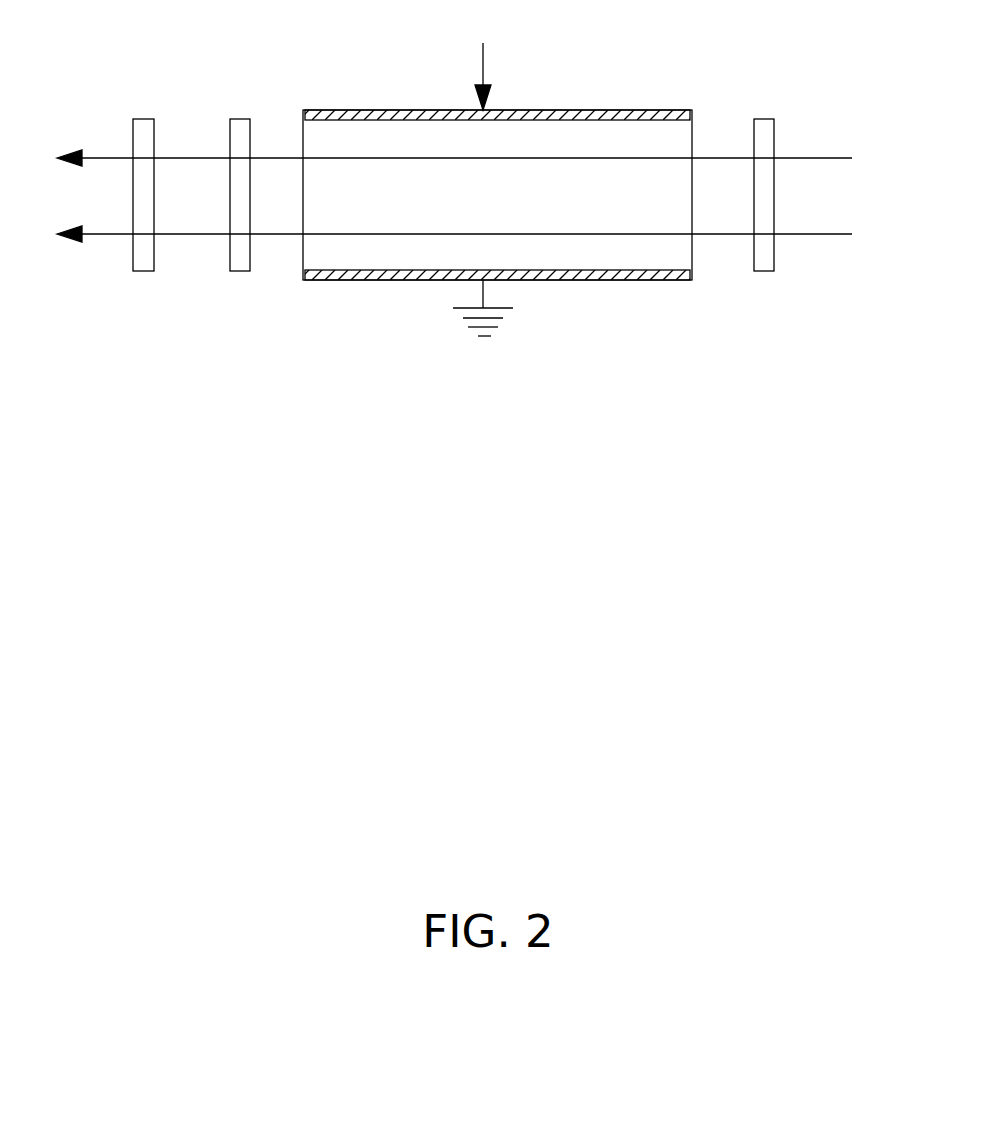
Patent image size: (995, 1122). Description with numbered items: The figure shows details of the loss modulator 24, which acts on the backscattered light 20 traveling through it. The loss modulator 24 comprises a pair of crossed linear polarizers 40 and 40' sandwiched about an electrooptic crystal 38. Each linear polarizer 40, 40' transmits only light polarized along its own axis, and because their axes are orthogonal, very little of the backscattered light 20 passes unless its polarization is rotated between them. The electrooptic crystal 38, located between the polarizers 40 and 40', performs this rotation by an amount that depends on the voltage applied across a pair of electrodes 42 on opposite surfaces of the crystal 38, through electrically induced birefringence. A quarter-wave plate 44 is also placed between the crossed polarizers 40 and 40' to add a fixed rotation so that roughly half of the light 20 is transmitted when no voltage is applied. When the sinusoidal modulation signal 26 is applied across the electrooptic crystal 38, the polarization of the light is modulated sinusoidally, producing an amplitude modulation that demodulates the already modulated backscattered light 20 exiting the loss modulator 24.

The backscattered light 20 is at (813, 159).
The loss modulator 24 is at (665, 466).
The sinusoidal modulation signal 26 is at (483, 67).
The electrooptic crystal 38 is at (378, 292).
The linear polarizer 40 is at (765, 250).
The linear polarizer 40' is at (143, 250).
The electrodes 42 is at (658, 110).
The quarter-wave plate 44 is at (240, 119).